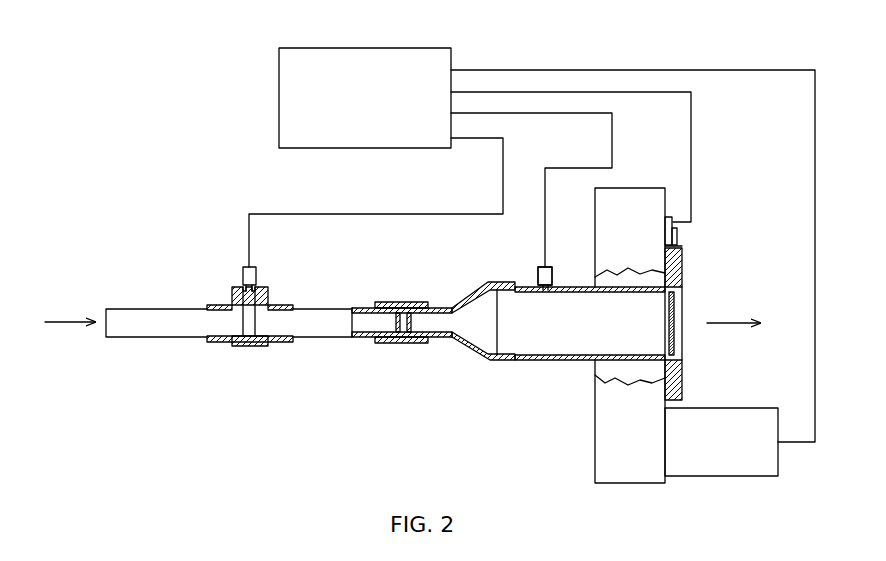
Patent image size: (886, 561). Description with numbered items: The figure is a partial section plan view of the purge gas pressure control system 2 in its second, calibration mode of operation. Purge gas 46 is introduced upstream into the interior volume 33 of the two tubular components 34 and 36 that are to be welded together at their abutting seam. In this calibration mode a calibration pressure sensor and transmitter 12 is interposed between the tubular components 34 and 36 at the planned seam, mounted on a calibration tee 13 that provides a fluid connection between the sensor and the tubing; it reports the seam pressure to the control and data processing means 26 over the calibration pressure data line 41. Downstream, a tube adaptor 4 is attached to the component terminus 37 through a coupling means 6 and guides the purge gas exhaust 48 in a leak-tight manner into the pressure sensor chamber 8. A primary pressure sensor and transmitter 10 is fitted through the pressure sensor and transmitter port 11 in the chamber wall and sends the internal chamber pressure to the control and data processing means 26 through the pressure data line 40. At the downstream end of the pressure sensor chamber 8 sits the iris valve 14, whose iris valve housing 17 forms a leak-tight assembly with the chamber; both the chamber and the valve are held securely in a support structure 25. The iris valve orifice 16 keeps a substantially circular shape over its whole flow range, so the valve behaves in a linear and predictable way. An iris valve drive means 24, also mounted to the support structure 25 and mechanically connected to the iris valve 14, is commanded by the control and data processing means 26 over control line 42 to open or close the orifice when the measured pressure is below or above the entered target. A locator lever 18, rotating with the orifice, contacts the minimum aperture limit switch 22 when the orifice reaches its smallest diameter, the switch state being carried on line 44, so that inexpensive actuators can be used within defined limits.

The purge gas pressure control system 2 is at (492, 449).
The tube adaptor 4 is at (478, 350).
The coupling means 6 is at (418, 340).
The pressure sensor chamber 8 is at (574, 338).
The primary pressure sensor and transmitter 10 is at (545, 282).
The pressure sensor and transmitter port 11 is at (244, 282).
The calibration pressure sensor and transmitter 12 is at (242, 272).
The calibration tee 13 is at (237, 343).
The iris valve 14 is at (675, 300).
The iris valve orifice 16 is at (675, 328).
The iris valve housing 17 is at (680, 395).
The locator lever 18 is at (673, 242).
The minimum aperture limit switch 22 is at (670, 246).
The iris valve drive means 24 is at (738, 457).
The support structure 25 is at (618, 472).
The control and data processing means 26 is at (392, 107).
The interior volume 33 is at (368, 322).
The tubular component 34 is at (147, 317).
The tubular component 36 is at (326, 325).
The component terminus 37 is at (400, 322).
The pressure data line 40 is at (612, 155).
The calibration pressure data line 41 is at (503, 193).
The control line 42 is at (712, 70).
The signal line 44 is at (692, 158).
The purge flow 46 is at (104, 318).
The purge gas exhaust 48 is at (695, 315).